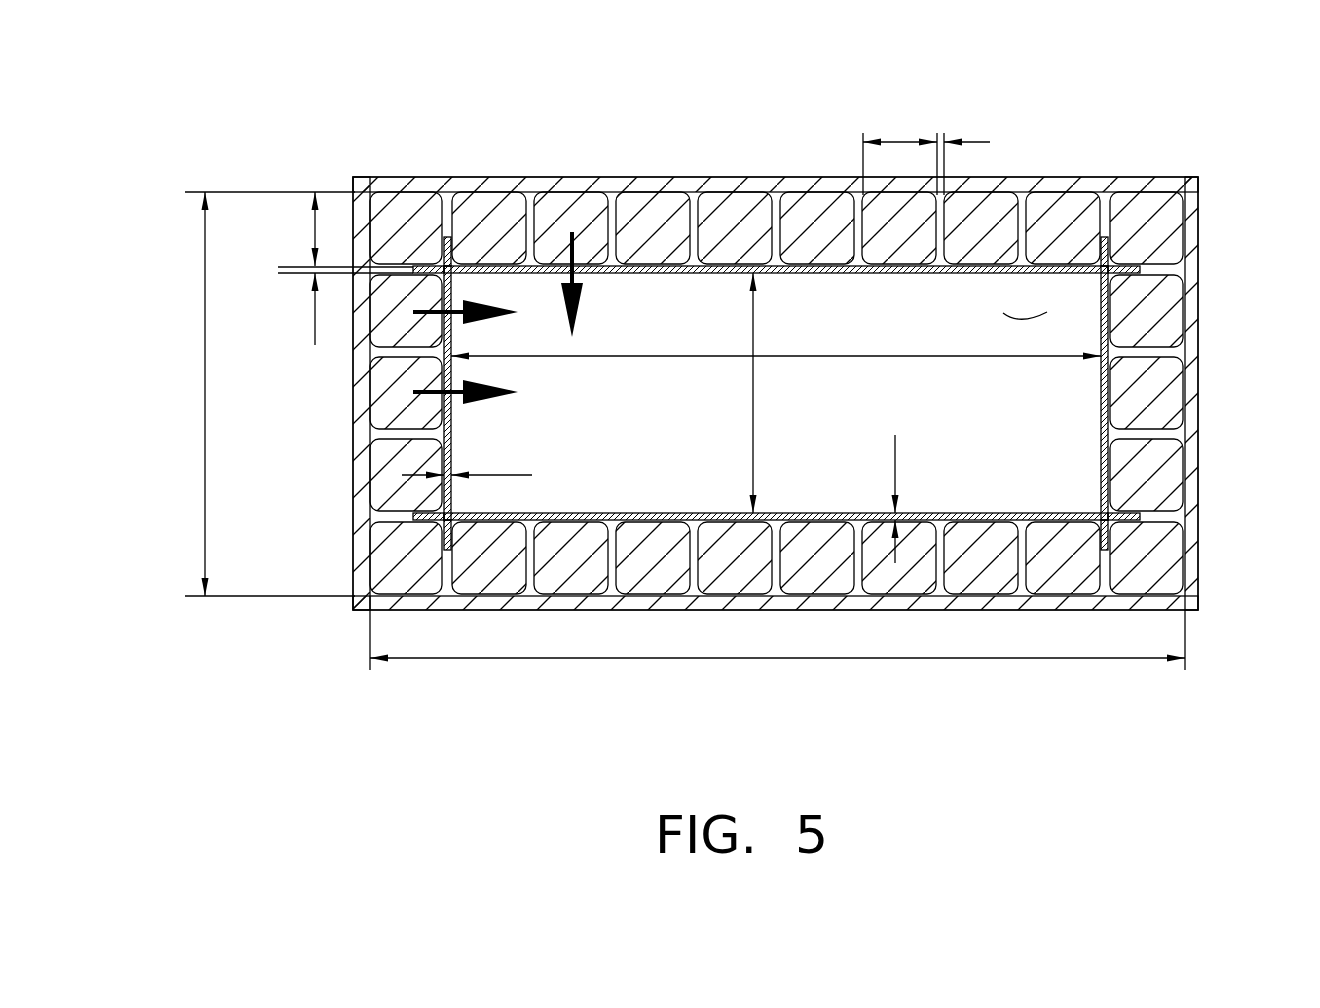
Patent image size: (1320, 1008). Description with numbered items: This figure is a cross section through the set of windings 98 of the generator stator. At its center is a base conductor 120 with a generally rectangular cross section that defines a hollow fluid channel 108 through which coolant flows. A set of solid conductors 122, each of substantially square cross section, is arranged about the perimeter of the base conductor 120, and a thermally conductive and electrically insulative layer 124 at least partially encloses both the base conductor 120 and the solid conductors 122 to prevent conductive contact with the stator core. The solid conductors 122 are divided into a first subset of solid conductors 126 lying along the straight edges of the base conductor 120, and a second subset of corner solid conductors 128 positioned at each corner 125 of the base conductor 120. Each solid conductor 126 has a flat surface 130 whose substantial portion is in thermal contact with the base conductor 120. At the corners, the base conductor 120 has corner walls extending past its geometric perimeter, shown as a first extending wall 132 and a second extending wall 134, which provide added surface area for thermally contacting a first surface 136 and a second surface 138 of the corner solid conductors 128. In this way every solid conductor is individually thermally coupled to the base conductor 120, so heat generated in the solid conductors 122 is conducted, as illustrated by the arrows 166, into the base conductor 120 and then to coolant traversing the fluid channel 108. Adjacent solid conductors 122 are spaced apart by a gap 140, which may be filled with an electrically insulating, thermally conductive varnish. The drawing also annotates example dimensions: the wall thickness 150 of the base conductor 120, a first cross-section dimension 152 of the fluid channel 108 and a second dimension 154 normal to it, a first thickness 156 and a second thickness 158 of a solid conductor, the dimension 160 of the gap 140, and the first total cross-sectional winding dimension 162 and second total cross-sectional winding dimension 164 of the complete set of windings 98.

The set of windings 98 is at (1300, 96).
The hollow fluid channel 108 is at (1007, 312).
The base conductor 120 is at (1107, 328).
The set of solid conductors 122 is at (1143, 470).
The thermally conductive and electrically insulative layer 124 is at (606, 186).
The corner 125 is at (462, 285).
The first subset of solid conductors 126 is at (655, 605).
The second subset of corner solid conductors 128 is at (420, 605).
The surface 130 is at (589, 500).
The first extending wall 132 is at (440, 264).
The second extending wall 134 is at (449, 237).
The first surface 136 is at (414, 530).
The second surface 138 is at (434, 548).
The gap 140 is at (1090, 583).
The thickness 150 is at (500, 475).
The first cross-section dimension 152 is at (817, 357).
The second dimension 154 is at (753, 325).
The first cross-section dimension or thickness of a solid conductor 156 is at (315, 235).
The second cross-section dimension or thickness of a solid conductor 158 is at (900, 142).
The dimension of the gap 160 is at (315, 328).
The first total cross-sectional winding dimension 162 is at (795, 658).
The second total cross-sectional winding dimension 164 is at (205, 390).
The arrows 166 is at (462, 316).